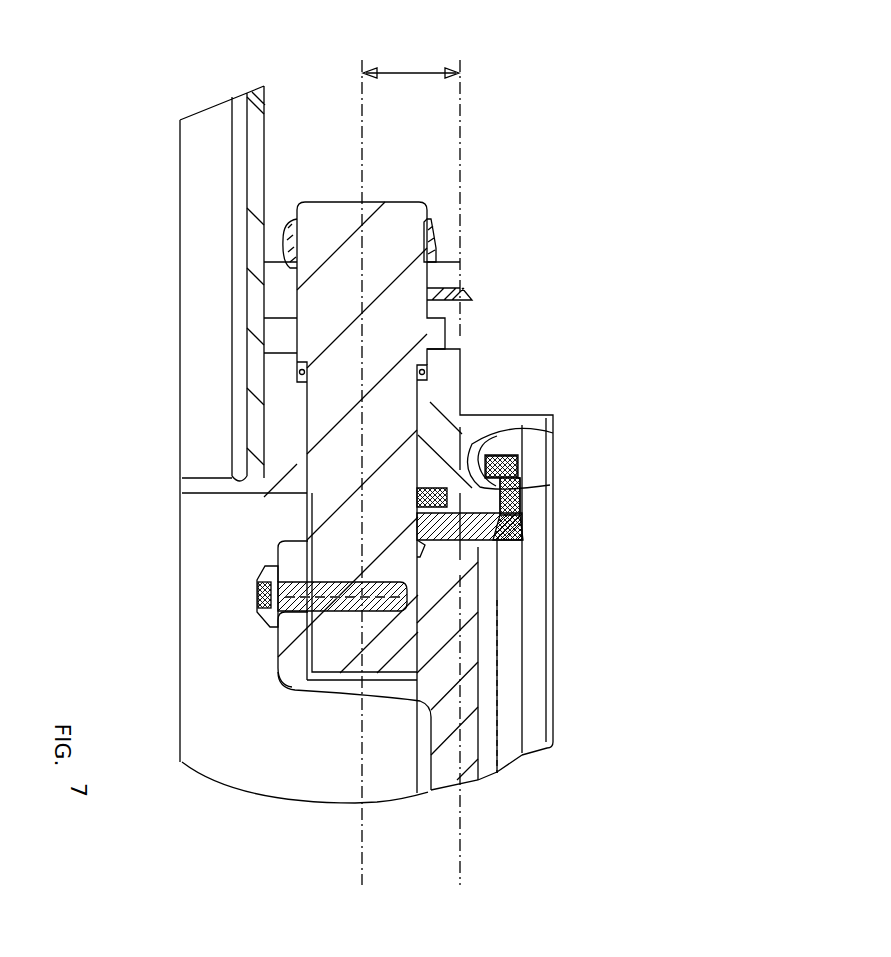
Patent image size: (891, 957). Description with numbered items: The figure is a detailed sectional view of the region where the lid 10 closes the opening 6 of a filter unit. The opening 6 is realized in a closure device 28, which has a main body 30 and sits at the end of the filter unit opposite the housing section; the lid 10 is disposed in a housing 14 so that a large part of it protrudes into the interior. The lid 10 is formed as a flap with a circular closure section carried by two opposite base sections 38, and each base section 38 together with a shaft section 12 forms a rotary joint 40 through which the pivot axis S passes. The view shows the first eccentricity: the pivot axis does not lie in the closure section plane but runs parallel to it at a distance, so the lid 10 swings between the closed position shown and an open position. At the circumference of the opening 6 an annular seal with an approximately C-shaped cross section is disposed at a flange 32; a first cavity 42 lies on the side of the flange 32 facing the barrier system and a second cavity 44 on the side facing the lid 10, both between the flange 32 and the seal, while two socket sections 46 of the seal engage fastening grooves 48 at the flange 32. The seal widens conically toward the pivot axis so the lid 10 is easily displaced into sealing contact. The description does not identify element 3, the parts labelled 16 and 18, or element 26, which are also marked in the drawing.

The axis 3 is at (460, 128).
The opening 6 is at (522, 585).
The lid 10 is at (480, 700).
The shaft section 12 is at (360, 93).
The housing 14 is at (411, 89).
The nut 16 is at (305, 198).
The flange body 18 is at (254, 89).
The bearing 26 is at (480, 752).
The closure device 28 is at (553, 417).
The main body 30 is at (437, 236).
The flange 32 is at (522, 437).
The base section 38 is at (277, 657).
The rotary joint 40 is at (473, 291).
The first cavity 42 is at (522, 527).
The second cavity 44 is at (522, 505).
The socket section 46 is at (522, 483).
The fastening groove 48 is at (522, 483).